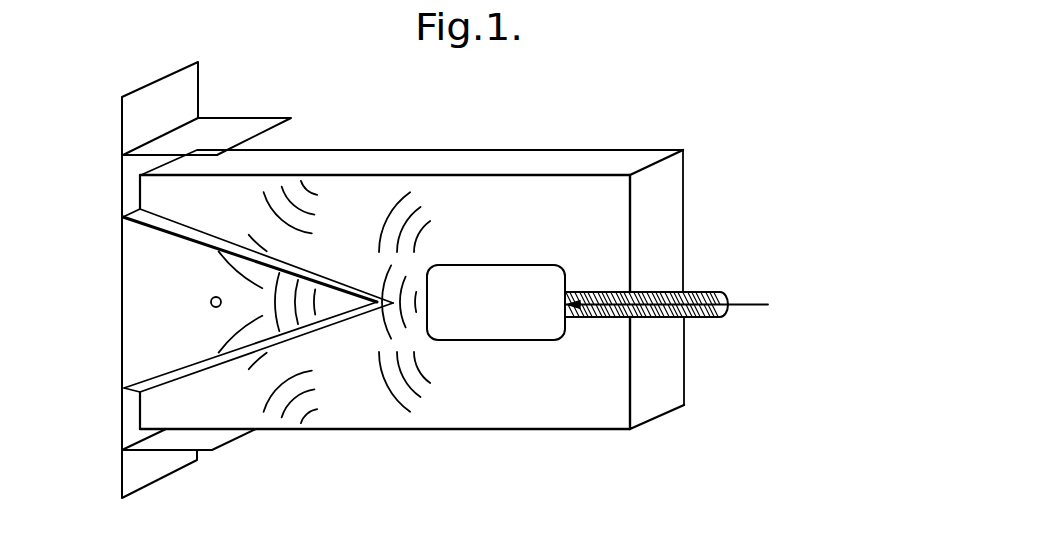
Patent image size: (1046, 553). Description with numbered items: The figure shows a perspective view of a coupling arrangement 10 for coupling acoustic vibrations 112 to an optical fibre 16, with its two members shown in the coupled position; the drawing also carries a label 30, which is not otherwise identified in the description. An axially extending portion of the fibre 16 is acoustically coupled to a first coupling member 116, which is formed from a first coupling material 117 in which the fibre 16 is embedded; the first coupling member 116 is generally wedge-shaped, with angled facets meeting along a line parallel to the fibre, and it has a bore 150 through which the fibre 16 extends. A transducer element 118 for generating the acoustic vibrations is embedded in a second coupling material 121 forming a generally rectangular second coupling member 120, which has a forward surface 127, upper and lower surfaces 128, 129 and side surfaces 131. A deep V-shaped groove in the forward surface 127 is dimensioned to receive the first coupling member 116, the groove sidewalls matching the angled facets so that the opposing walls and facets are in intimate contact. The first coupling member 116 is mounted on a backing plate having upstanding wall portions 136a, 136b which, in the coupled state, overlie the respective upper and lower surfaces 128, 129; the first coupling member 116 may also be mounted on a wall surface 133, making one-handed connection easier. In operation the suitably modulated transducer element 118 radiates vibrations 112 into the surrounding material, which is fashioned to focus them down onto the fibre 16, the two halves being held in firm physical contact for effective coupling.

The coupling arrangement 10 is at (630, 138).
The block body 30 is at (676, 205).
The optical fibre 16 is at (213, 307).
The acoustic vibrations 112 is at (383, 398).
The first coupling member 116 is at (138, 343).
The first coupling material 117 is at (132, 297).
The transducer element 118 is at (473, 340).
The second coupling member 120 is at (653, 408).
The second coupling material 121 is at (580, 417).
The forward surface 127 is at (140, 195).
The upper surface 128 is at (515, 167).
The lower surface 129 is at (323, 430).
The side surface 131 is at (385, 147).
The wall surface 133 is at (120, 425).
The upstanding wall portion 136a is at (230, 128).
The upstanding wall portion 136b is at (203, 453).
The bore 150 is at (214, 297).